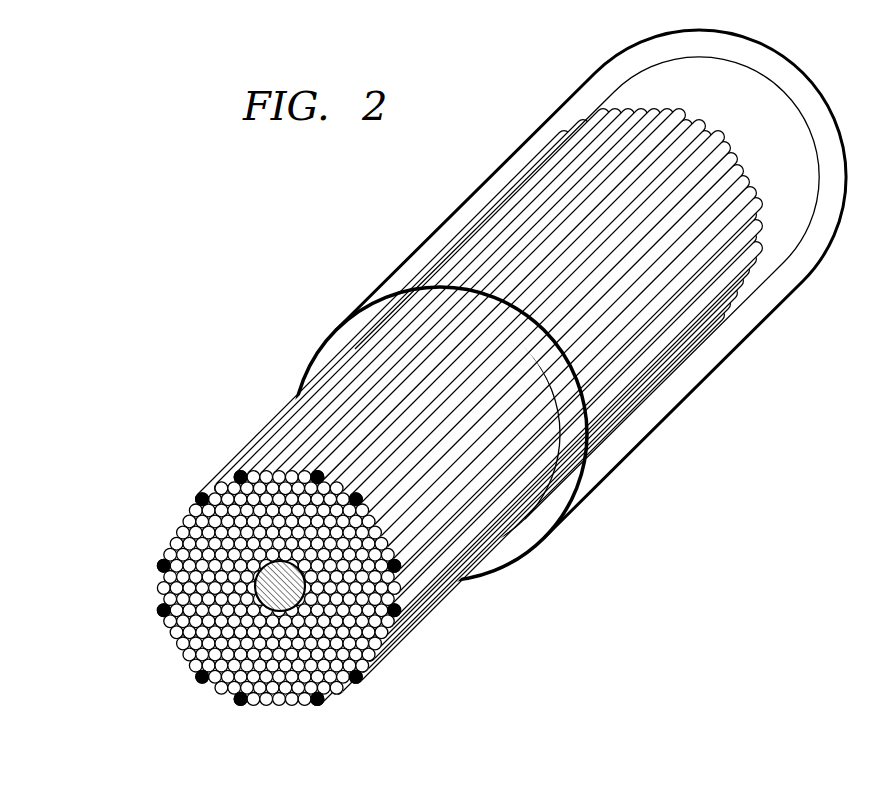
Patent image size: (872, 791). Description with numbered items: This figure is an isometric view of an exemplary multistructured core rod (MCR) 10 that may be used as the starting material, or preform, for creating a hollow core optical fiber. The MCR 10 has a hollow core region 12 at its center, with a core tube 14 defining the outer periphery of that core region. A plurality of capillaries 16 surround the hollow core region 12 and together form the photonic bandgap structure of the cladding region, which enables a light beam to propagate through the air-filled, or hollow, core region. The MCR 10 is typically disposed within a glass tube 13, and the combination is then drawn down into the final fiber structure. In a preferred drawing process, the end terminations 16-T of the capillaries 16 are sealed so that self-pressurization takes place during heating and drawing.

The multistructured core rod 10 is at (222, 428).
The hollow core region 12 is at (273, 594).
The glass tube 13 is at (685, 378).
The core tube 14 is at (289, 608).
The capillaries 16 is at (210, 553).
The end terminations 16-T is at (170, 617).